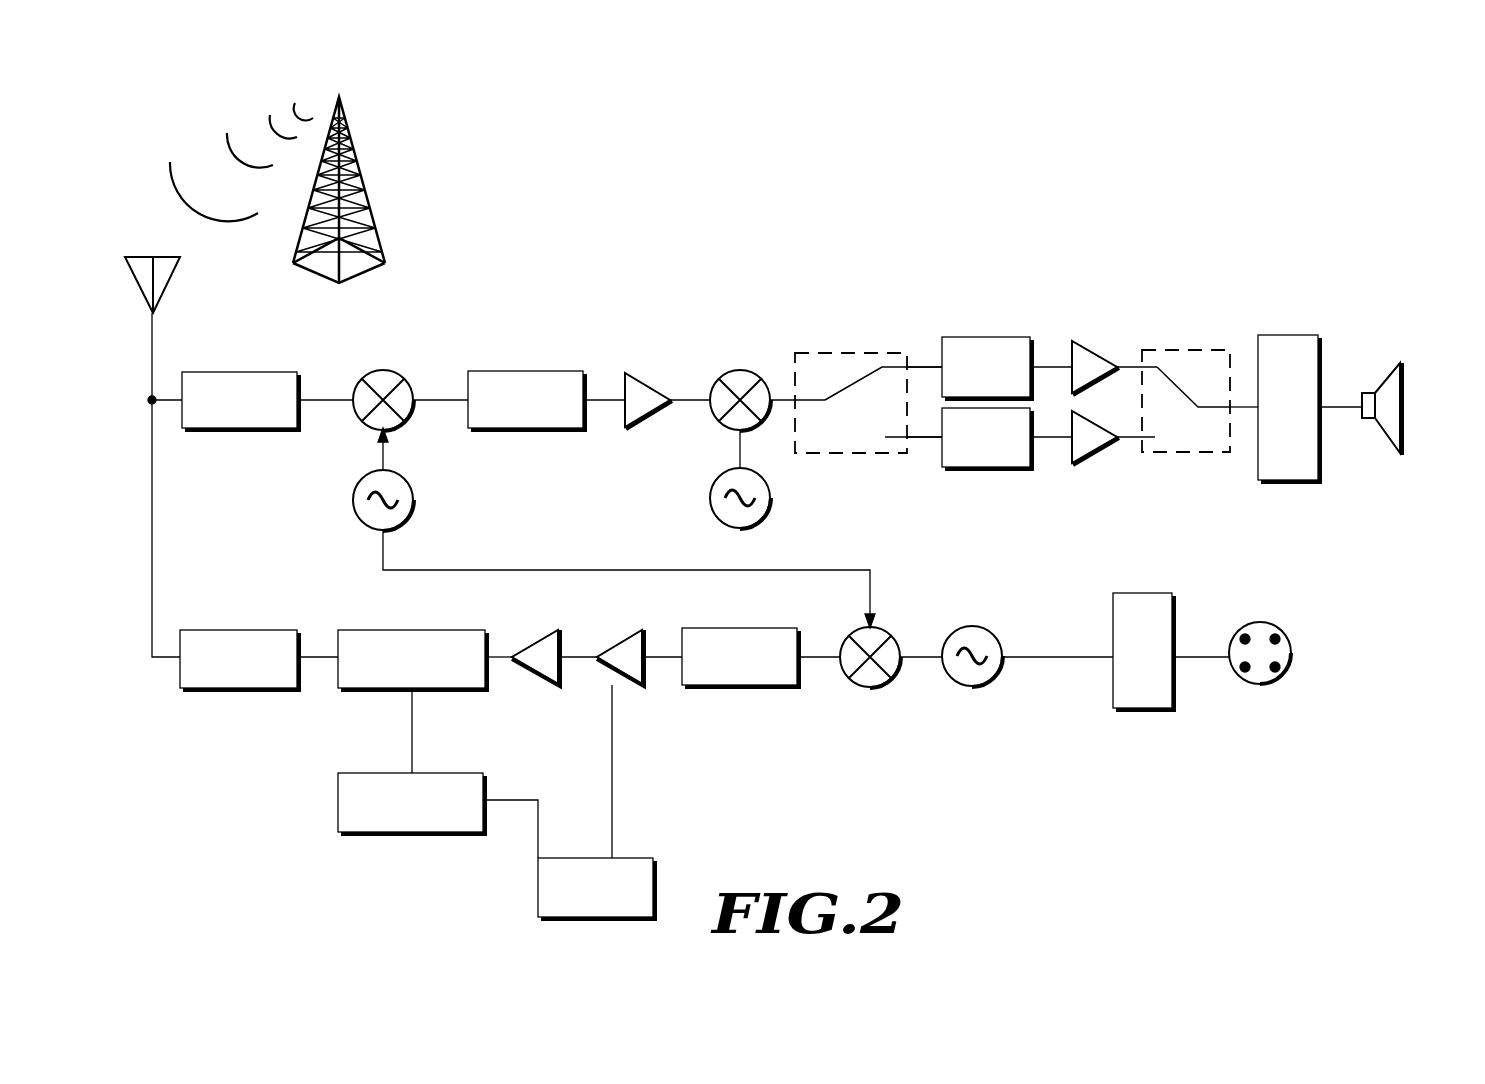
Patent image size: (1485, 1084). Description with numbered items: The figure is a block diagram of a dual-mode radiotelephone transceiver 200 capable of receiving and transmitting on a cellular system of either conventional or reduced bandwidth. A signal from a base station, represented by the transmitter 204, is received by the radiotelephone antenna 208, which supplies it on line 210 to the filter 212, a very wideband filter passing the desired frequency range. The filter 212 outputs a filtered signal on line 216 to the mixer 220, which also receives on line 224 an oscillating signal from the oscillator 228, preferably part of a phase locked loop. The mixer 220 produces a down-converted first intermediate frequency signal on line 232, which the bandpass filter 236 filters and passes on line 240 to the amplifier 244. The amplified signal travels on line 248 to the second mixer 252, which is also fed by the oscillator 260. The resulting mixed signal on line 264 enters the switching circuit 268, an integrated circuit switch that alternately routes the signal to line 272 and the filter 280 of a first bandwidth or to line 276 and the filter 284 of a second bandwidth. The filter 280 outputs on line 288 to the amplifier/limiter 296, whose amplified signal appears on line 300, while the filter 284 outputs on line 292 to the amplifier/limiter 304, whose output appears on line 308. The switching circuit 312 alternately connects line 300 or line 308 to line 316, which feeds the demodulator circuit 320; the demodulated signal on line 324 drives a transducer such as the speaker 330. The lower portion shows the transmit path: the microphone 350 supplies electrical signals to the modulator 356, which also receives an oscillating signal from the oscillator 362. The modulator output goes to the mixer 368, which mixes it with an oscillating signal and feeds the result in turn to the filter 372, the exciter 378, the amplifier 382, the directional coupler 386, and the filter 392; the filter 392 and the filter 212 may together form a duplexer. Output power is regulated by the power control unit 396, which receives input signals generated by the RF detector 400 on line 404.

The transceiver 200 is at (602, 268).
The transmitter 204 is at (370, 212).
The radiotelephone antenna 208 is at (124, 258).
The line 210 is at (143, 485).
The filter 212 is at (195, 372).
The line 216 is at (311, 408).
The mixer 220 is at (362, 380).
The line 224 is at (386, 456).
The oscillator 228 is at (355, 500).
The line 232 is at (437, 385).
The filter 236 is at (525, 370).
The line 240 is at (607, 407).
The amplifier 244 is at (640, 378).
The line 248 is at (684, 407).
The second mixer 252 is at (732, 370).
The oscillator 260 is at (708, 498).
The line 264 is at (777, 410).
The switching circuit 268 is at (812, 352).
The line 272 is at (920, 366).
The line 276 is at (920, 440).
The filter 280 is at (957, 337).
The filter 284 is at (988, 468).
The line 288 is at (1049, 366).
The line 292 is at (1051, 440).
The amplifier/limiter 296 is at (1090, 345).
The line 300 is at (1128, 370).
The amplifier/limiter 304 is at (1097, 455).
The line 308 is at (1128, 441).
The switching circuit 312 is at (1172, 350).
The line 316 is at (1240, 410).
The demodulator circuit 320 is at (1290, 335).
The line 324 is at (1340, 408).
The speaker 330 is at (1393, 365).
The microphone 350 is at (1272, 622).
The modulator 356 is at (1148, 593).
The oscillator 362 is at (975, 625).
The mixer 368 is at (848, 680).
The filter 372 is at (750, 627).
The exciter 378 is at (630, 632).
The amplifier 382 is at (545, 632).
The directional coupler 386 is at (400, 630).
The filter 392 is at (238, 630).
The power control unit 396 is at (640, 858).
The RF detector 400 is at (440, 773).
The line 404 is at (510, 800).